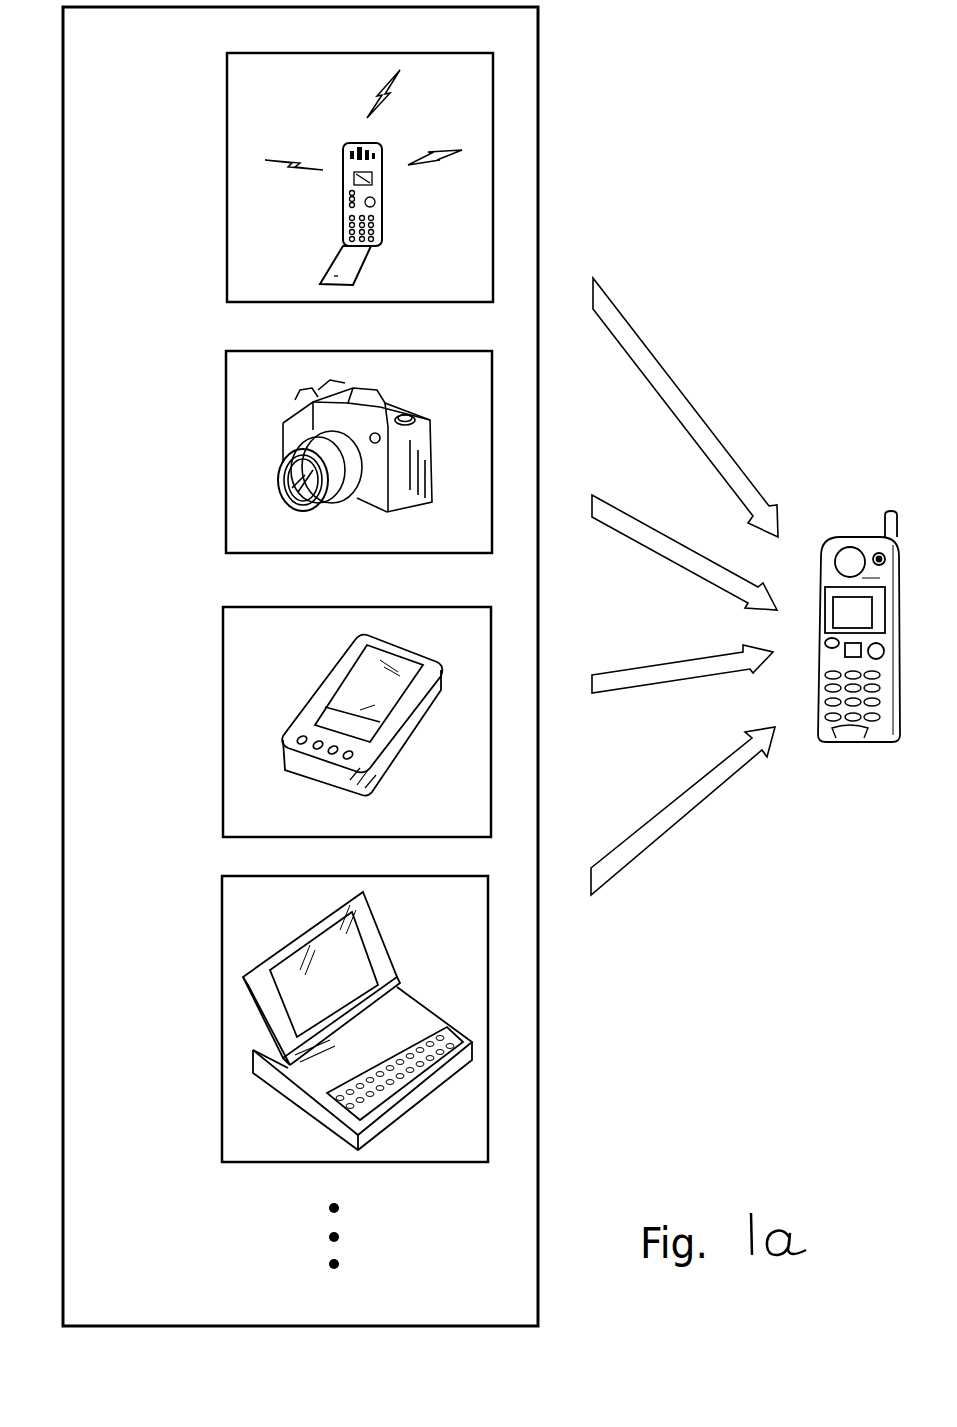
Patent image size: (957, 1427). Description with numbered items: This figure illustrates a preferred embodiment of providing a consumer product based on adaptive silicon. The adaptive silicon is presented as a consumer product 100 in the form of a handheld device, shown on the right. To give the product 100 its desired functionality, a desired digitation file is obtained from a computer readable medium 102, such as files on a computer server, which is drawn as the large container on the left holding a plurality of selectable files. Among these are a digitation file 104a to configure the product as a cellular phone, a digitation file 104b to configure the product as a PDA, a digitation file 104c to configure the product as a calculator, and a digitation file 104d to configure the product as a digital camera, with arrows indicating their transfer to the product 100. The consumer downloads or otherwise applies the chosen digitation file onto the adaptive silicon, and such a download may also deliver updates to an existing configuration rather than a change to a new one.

The consumer product 100 is at (853, 537).
The computer readable medium 102 is at (539, 1104).
The digitation file 104a is at (227, 178).
The digitation file 104b is at (226, 455).
The digitation file 104c is at (223, 725).
The digitation file 104d is at (222, 1020).